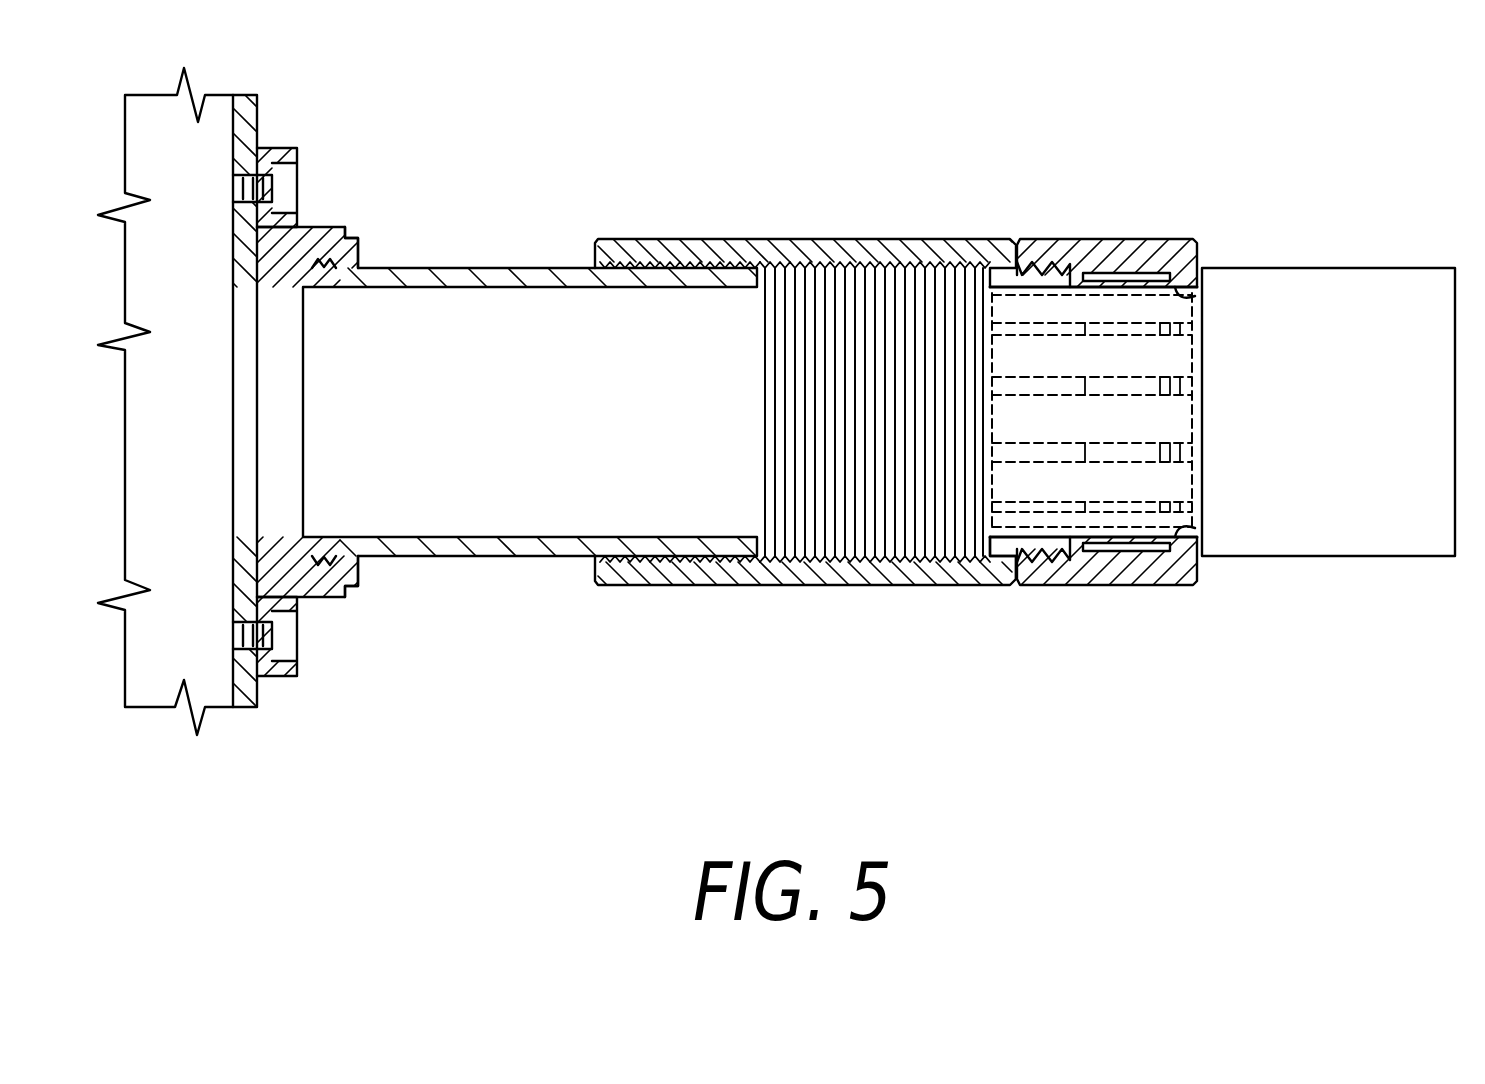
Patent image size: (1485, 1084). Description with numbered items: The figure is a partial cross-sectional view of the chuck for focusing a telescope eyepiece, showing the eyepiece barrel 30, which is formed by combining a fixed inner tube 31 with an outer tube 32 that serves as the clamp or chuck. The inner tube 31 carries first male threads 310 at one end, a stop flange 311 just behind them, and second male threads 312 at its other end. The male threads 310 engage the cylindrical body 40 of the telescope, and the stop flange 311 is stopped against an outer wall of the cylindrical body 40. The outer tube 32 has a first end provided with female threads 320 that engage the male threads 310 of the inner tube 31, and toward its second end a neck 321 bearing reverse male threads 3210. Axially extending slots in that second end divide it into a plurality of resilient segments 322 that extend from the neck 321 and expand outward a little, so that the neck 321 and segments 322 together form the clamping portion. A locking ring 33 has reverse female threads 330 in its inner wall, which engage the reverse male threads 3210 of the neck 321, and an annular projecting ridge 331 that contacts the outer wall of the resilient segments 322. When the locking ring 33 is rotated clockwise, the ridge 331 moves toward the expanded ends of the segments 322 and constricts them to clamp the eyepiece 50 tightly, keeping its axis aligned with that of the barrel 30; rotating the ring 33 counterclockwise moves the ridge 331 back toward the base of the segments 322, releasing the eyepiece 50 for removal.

The eyepiece barrel 30 is at (700, 722).
The inner tube 31 is at (515, 547).
The first male threads 310 is at (323, 563).
The stop flange 311 is at (360, 573).
The outer tube 32 is at (690, 572).
The second male threads 312 is at (733, 573).
The female threads 320 is at (905, 555).
The neck 321 is at (1055, 560).
The reverse male threads 3210 is at (1055, 560).
The resilient segments 322 is at (1127, 548).
The locking ring 33 is at (1115, 258).
The reverse female threads 330 is at (1060, 265).
The annular projecting ridge 331 is at (1195, 532).
The cylindrical body 40 is at (248, 677).
The eyepiece 50 is at (1380, 530).